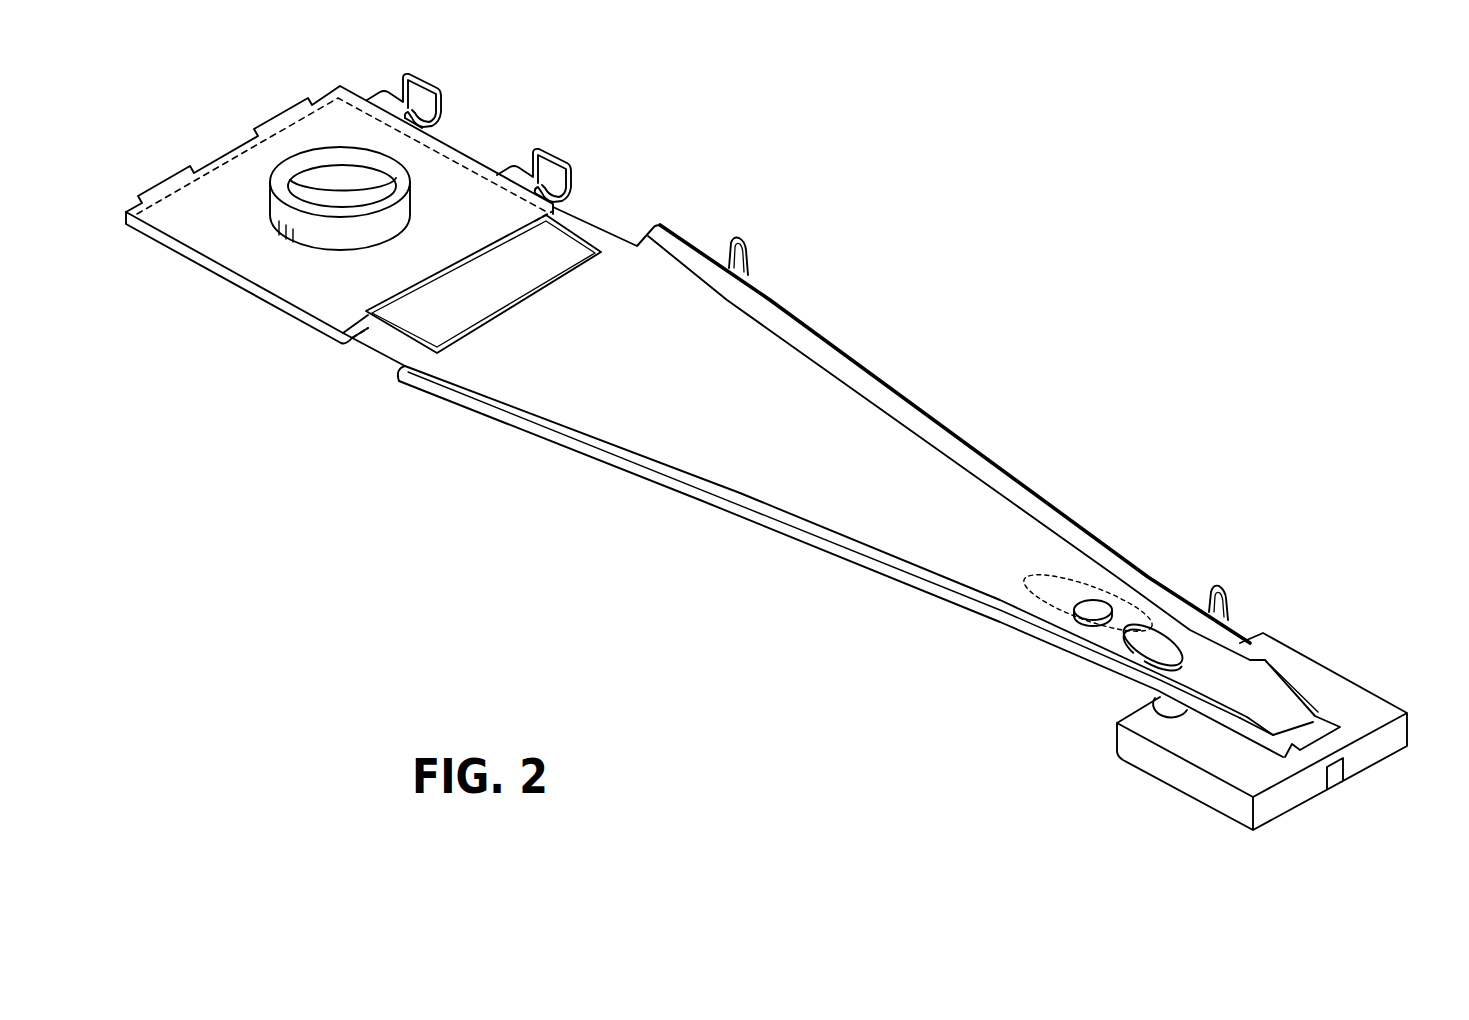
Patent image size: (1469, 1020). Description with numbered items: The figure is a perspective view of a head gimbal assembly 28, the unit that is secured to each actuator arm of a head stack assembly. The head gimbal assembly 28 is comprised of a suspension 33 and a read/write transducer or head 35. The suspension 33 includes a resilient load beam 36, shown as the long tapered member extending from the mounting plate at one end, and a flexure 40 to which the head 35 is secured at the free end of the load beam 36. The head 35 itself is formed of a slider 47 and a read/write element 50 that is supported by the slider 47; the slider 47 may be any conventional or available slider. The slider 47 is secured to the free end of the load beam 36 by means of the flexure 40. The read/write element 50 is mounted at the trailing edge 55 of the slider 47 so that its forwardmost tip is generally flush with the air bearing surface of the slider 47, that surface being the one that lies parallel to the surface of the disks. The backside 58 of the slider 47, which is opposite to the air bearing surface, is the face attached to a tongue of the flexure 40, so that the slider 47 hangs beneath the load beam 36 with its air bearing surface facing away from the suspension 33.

The head gimbal assembly 28 is at (797, 479).
The suspension 33 is at (841, 482).
The read/write head 35 is at (1287, 716).
The load beam 36 is at (873, 447).
The flexure 40 is at (1157, 700).
The slider 47 is at (1333, 668).
The read/write element 50 is at (1333, 784).
The trailing edge 55 is at (1410, 739).
The backside 58 is at (1200, 727).